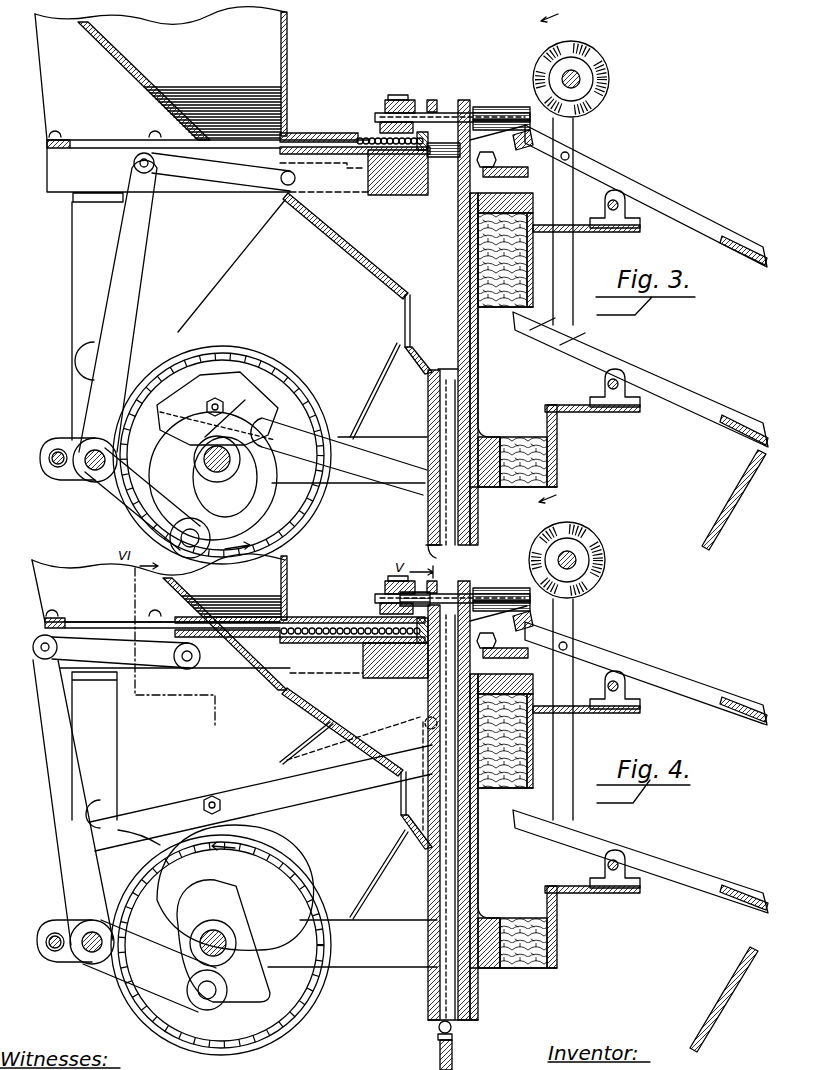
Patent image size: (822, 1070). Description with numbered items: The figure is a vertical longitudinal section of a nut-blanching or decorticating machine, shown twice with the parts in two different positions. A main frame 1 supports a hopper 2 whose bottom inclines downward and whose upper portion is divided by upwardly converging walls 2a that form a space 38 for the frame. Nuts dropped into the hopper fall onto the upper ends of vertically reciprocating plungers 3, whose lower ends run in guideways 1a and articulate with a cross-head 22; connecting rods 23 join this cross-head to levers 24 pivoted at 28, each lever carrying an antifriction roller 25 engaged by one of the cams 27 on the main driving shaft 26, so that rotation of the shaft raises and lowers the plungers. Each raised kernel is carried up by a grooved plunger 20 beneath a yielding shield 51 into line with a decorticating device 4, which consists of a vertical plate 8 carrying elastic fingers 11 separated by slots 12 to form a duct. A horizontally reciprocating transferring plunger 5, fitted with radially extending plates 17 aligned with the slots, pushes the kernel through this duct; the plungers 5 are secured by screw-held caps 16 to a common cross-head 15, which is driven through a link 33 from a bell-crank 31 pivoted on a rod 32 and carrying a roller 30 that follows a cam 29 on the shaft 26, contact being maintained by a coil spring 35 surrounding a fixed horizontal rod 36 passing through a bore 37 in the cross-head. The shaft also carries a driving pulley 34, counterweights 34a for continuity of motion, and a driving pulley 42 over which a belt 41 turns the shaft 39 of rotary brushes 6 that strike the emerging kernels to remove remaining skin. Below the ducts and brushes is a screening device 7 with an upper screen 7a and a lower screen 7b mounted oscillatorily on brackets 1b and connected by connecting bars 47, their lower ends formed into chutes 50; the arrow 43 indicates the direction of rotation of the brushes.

In FIG. 3, the main frame 1 is at (237, 307).
In FIG. 4, the main frame 1 is at (241, 788).
In FIG. 3, the guideways 1a is at (467, 397).
In FIG. 4, the guideways 1a is at (512, 842).
In FIG. 3, the brackets 1b is at (596, 326).
In FIG. 4, the brackets 1b is at (586, 806).
In FIG. 3, the hopper 2 is at (233, 190).
In FIG. 4, the hopper 2 is at (232, 701).
In FIG. 3, the walls 2a is at (240, 98).
In FIG. 4, the walls 2a is at (186, 598).
In FIG. 3, the vertically reciprocating plungers 3 is at (467, 420).
In FIG. 4, the vertically reciprocating plungers 3 is at (455, 888).
In FIG. 3, the decorticating devices 4 is at (493, 108).
In FIG. 4, the decorticating devices 4 is at (501, 585).
In FIG. 3, the transferring plungers 5 is at (424, 115).
In FIG. 4, the transferring plungers 5 is at (443, 587).
In FIG. 3, the rotary brushes 6 is at (607, 57).
In FIG. 4, the rotary brushes 6 is at (584, 555).
In FIG. 3, the screening device 7 is at (712, 252).
In FIG. 4, the screening device 7 is at (685, 695).
In FIG. 3, the upper screen 7a is at (700, 225).
In FIG. 4, the upper screen 7a is at (650, 677).
In FIG. 3, the lower screen 7b is at (640, 363).
In FIG. 4, the lower screen 7b is at (707, 883).
In FIG. 3, the vertical plate 8 is at (463, 182).
In FIG. 4, the vertical plate 8 is at (460, 653).
In FIG. 3, the fingers 11 is at (485, 112).
In FIG. 4, the fingers 11 is at (501, 574).
In FIG. 3, the slots 12 is at (502, 140).
In FIG. 4, the slots 12 is at (499, 632).
In FIG. 3, the cross-head 15 is at (333, 133).
In FIG. 4, the cross-head 15 is at (243, 620).
In FIG. 3, the screw-held caps 16 is at (384, 100).
In FIG. 4, the screw-held caps 16 is at (355, 575).
In FIG. 4, the radially extending plates 17 is at (400, 594).
In FIG. 3, the vertically reciprocating plunger 20 is at (453, 380).
In FIG. 4, the vertically reciprocating plunger 20 is at (443, 640).
In FIG. 4, the cross-head 22 is at (453, 1046).
In FIG. 3, the connecting rods 23 is at (427, 547).
In FIG. 4, the connecting rods 23 is at (393, 803).
In FIG. 3, the levers 24 is at (339, 456).
In FIG. 4, the levers 24 is at (261, 798).
In FIG. 3, the antifriction roller 25 is at (243, 352).
In FIG. 4, the antifriction roller 25 is at (203, 784).
In FIG. 3, the main driving shaft 26 is at (200, 468).
In FIG. 4, the main driving shaft 26 is at (234, 940).
In FIG. 3, the cams 27 is at (300, 533).
In FIG. 4, the cams 27 is at (235, 887).
In FIG. 3, the pivot 28 is at (76, 357).
In FIG. 4, the pivot 28 is at (118, 817).
In FIG. 3, the cam 29 is at (225, 477).
In FIG. 4, the cam 29 is at (223, 941).
In FIG. 3, the antifriction roller 30 is at (212, 538).
In FIG. 4, the antifriction roller 30 is at (233, 990).
In FIG. 3, the bell-crank 31 is at (139, 355).
In FIG. 4, the bell-crank 31 is at (124, 836).
In FIG. 3, the rod 32 is at (87, 470).
In FIG. 4, the rod 32 is at (85, 955).
In FIG. 3, the link 33 is at (214, 172).
In FIG. 4, the link 33 is at (116, 652).
In FIG. 3, the driving pulley 34 is at (222, 455).
In FIG. 4, the driving pulley 34 is at (293, 1030).
In FIG. 3, the counterweights 34a is at (175, 390).
In FIG. 3, the coil spring 35 is at (360, 160).
In FIG. 4, the coil spring 35 is at (338, 642).
In FIG. 3, the fixed horizontal rod 36 is at (297, 147).
In FIG. 4, the fixed horizontal rod 36 is at (295, 642).
In FIG. 3, the bore 37 is at (318, 132).
In FIG. 4, the bore 37 is at (257, 647).
In FIG. 3, the space 38 is at (212, 112).
In FIG. 4, the space 38 is at (231, 606).
In FIG. 3, the shaft 39 is at (580, 79).
In FIG. 4, the shaft 39 is at (610, 569).
In FIG. 3, the belt 41 is at (278, 288).
In FIG. 4, the belt 41 is at (380, 867).
In FIG. 3, the driving pulley 42 is at (297, 408).
In FIG. 4, the driving pulley 42 is at (317, 987).
In FIG. 3, the rotation arrow 43 is at (528, 78).
In FIG. 4, the rotation arrow 43 is at (532, 527).
In FIG. 3, the connecting bars 47 is at (570, 248).
In FIG. 4, the connecting bars 47 is at (572, 747).
In FIG. 3, the chutes 50 is at (746, 250).
In FIG. 4, the chutes 50 is at (740, 712).
In FIG. 3, the shields 51 is at (440, 100).
In FIG. 4, the shields 51 is at (480, 590).